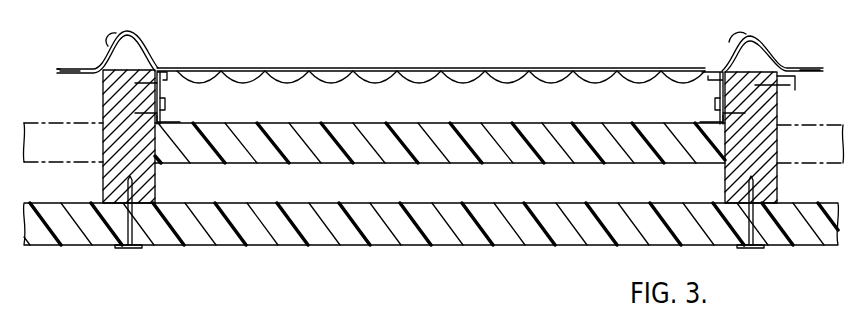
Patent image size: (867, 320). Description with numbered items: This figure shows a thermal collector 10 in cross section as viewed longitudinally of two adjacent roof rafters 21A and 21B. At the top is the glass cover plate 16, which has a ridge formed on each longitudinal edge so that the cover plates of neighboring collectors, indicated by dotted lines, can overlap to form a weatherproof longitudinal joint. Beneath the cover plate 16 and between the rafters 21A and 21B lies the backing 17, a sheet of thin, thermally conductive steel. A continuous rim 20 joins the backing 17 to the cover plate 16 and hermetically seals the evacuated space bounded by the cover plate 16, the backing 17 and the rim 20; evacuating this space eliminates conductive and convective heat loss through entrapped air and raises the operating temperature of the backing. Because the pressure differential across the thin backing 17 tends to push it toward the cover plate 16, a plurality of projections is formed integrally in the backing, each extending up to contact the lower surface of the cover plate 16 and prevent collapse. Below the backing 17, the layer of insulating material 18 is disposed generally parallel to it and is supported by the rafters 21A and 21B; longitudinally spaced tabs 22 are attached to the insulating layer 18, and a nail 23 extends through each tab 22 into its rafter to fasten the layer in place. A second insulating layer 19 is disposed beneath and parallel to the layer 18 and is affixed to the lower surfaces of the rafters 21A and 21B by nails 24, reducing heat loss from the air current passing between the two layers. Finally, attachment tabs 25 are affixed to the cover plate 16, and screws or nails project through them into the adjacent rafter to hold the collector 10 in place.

The thermal collector 10 is at (498, 62).
The glass cover plate 16 is at (253, 68).
The backing 17 is at (378, 84).
The insulating layer 18 is at (510, 124).
The insulating layer 19 is at (425, 232).
The continuous rim 20 is at (175, 70).
The rafter 21A is at (110, 175).
The rafter 21B is at (770, 182).
The tab 22 is at (180, 122).
The nail 23 is at (166, 112).
The nail 24 is at (120, 226).
The attachment tab 25 is at (164, 70).